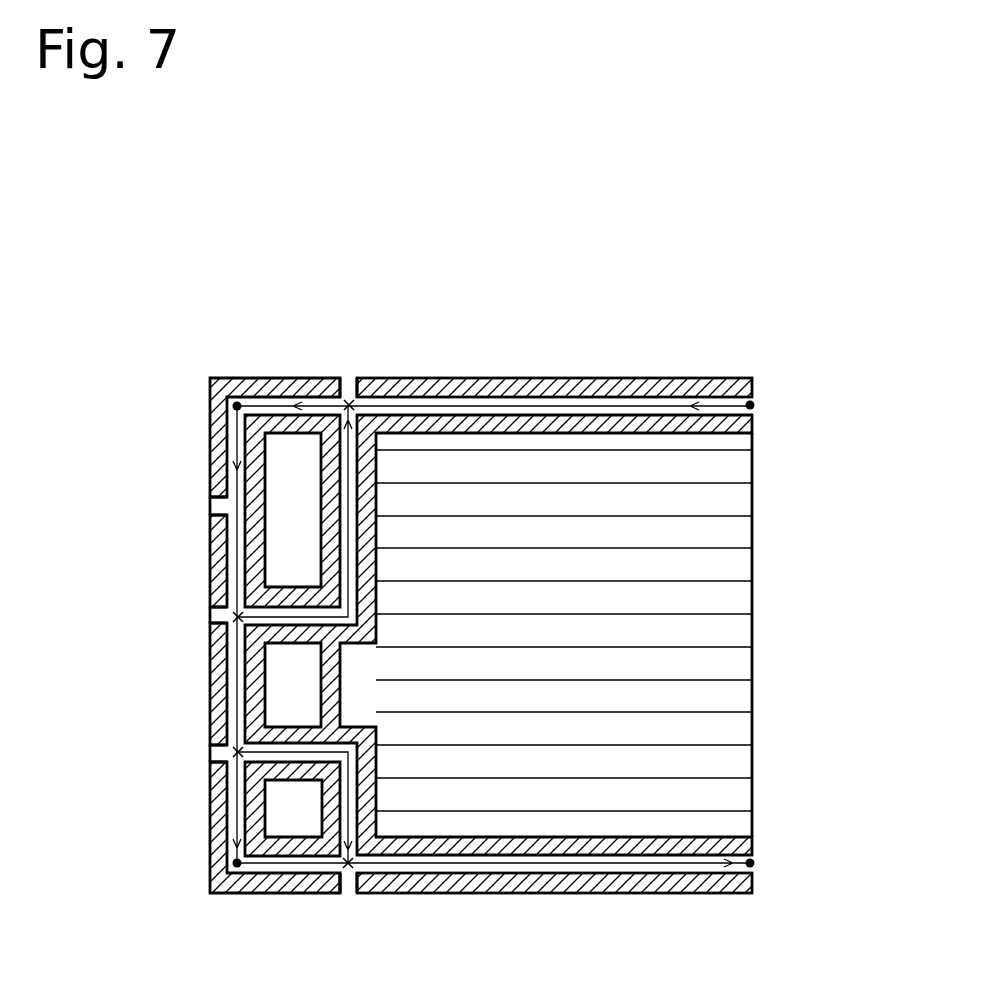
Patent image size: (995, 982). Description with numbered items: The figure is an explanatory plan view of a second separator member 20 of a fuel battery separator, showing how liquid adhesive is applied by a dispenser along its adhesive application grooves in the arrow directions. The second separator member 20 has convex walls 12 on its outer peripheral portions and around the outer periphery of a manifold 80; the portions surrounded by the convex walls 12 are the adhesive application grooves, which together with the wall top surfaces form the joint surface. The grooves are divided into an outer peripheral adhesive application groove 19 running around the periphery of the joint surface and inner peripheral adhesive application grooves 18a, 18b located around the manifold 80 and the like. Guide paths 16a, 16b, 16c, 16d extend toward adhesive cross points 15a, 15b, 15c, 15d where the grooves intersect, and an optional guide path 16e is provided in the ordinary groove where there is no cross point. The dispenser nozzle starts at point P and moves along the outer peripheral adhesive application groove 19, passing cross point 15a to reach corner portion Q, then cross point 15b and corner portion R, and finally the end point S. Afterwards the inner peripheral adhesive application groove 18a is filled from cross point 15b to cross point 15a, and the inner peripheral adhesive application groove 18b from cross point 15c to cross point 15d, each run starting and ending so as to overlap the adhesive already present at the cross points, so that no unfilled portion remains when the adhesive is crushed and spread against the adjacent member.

The convex wall 12 is at (610, 884).
The second separator member 20 is at (752, 693).
The outer peripheral adhesive application groove 19 is at (697, 868).
The manifold 80 is at (283, 430).
The inner peripheral adhesive application groove 18a is at (353, 537).
The inner peripheral adhesive application groove 18b is at (360, 772).
The cross point 15a is at (340, 398).
The cross point 15b is at (236, 615).
The cross point 15c is at (228, 760).
The cross point 15d is at (337, 877).
The guide path 16a is at (351, 386).
The guide path 16b is at (212, 622).
The guide path 16c is at (212, 752).
The guide path 16d is at (348, 886).
The guide path 16e is at (210, 510).
The point P is at (755, 403).
The corner portion Q is at (233, 406).
The corner portion R is at (233, 863).
The point S is at (755, 863).